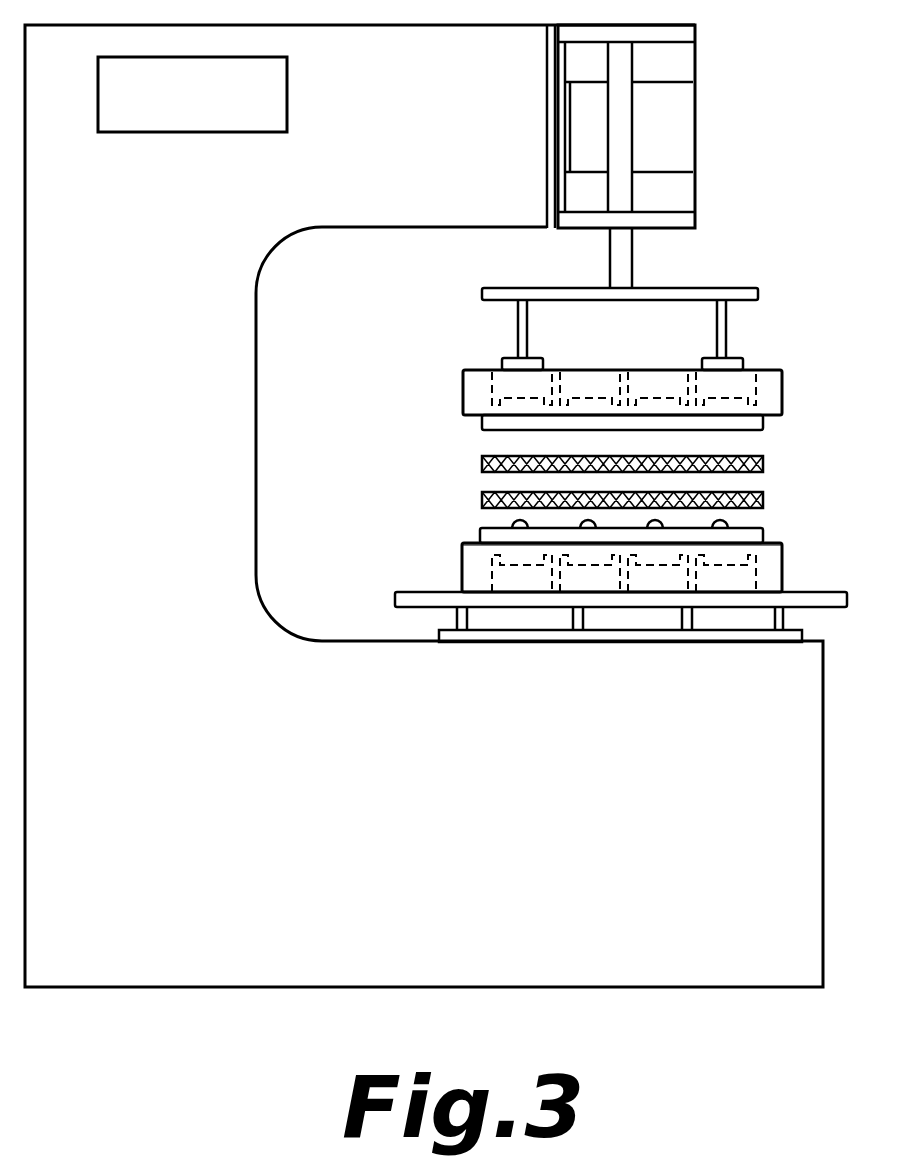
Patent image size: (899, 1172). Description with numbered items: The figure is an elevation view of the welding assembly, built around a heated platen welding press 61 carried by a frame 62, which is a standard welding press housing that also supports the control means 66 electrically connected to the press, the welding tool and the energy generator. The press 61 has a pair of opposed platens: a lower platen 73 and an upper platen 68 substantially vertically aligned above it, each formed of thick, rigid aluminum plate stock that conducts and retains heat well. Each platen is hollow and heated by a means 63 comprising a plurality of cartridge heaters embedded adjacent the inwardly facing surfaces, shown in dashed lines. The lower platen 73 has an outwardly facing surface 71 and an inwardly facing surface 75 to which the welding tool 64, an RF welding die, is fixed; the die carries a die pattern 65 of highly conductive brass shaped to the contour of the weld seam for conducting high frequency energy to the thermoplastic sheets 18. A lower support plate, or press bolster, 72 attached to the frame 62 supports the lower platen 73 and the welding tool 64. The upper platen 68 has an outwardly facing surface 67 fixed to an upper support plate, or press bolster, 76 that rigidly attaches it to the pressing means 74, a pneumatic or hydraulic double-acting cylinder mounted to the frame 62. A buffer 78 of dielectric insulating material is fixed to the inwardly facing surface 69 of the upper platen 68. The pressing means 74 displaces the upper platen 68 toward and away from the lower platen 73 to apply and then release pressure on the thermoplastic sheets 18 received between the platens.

The thermoplastic sheets 18 is at (763, 462).
The heated platen welding press 61 is at (757, 198).
The frame 62 is at (536, 830).
The means for heating the platen 63 is at (588, 395).
The welding tool 64 is at (763, 540).
The die pattern 65 is at (513, 525).
The control means 66 is at (212, 108).
The outwardly facing surface of upper platen 67 is at (477, 370).
The upper platen 68 is at (783, 392).
The inwardly facing surface of upper platen 69 is at (772, 416).
The outwardly facing surface of lower platen 71 is at (478, 595).
The lower support plate 72 is at (458, 620).
The lower platen 73 is at (783, 565).
The pressing means 74 is at (632, 262).
The inwardly facing surface of lower platen 75 is at (480, 550).
The upper support plate 76 is at (518, 338).
The buffer 78 is at (482, 423).